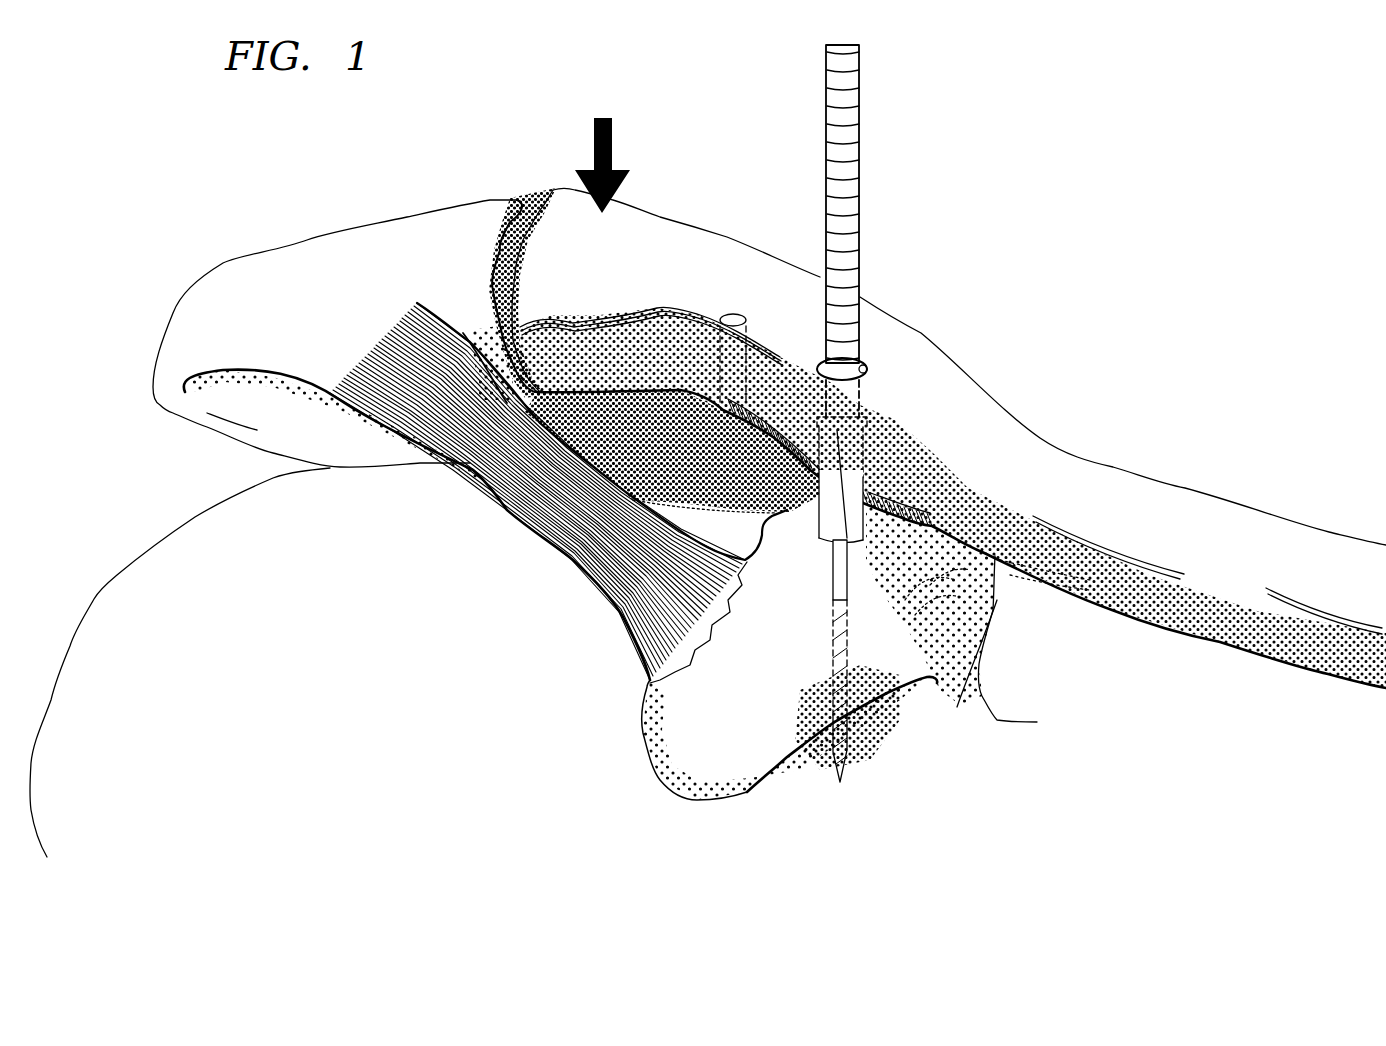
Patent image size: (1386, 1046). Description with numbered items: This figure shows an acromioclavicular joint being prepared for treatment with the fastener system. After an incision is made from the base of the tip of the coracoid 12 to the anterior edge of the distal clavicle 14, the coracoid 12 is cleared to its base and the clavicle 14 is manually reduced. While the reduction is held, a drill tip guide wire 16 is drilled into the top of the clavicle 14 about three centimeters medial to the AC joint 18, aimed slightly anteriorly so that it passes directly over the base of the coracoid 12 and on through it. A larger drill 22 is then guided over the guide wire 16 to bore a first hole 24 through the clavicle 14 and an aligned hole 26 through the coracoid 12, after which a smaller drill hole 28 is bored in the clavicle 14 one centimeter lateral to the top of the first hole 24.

The coracoid 12 is at (745, 792).
The clavicle 14 is at (921, 333).
The drill tip guide wire 16 is at (842, 762).
The AC joint 18 is at (733, 238).
The drill 22 is at (850, 208).
The first hole 24 is at (870, 372).
The hole 26 is at (828, 596).
The drill hole 28 is at (742, 318).